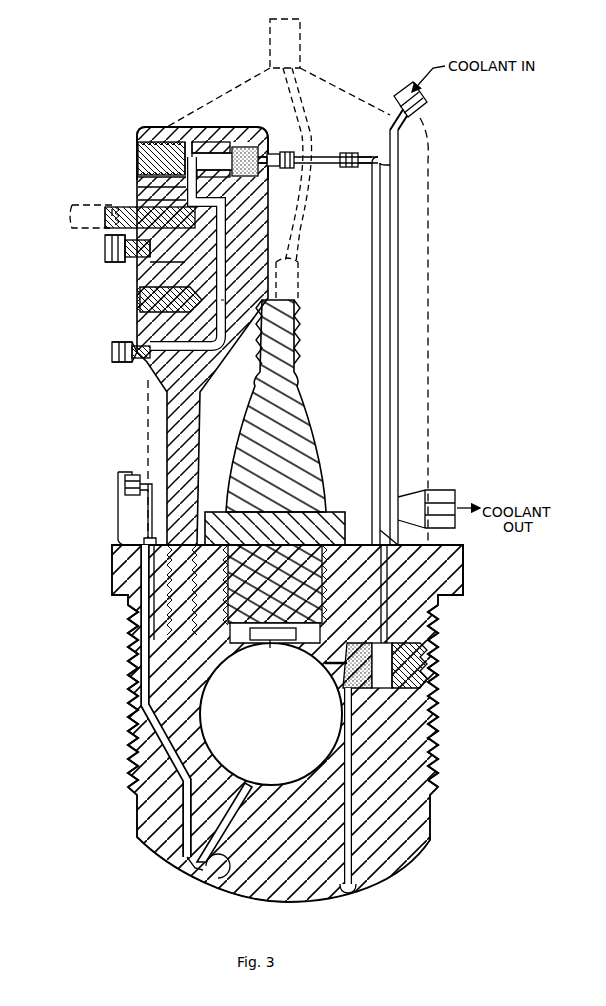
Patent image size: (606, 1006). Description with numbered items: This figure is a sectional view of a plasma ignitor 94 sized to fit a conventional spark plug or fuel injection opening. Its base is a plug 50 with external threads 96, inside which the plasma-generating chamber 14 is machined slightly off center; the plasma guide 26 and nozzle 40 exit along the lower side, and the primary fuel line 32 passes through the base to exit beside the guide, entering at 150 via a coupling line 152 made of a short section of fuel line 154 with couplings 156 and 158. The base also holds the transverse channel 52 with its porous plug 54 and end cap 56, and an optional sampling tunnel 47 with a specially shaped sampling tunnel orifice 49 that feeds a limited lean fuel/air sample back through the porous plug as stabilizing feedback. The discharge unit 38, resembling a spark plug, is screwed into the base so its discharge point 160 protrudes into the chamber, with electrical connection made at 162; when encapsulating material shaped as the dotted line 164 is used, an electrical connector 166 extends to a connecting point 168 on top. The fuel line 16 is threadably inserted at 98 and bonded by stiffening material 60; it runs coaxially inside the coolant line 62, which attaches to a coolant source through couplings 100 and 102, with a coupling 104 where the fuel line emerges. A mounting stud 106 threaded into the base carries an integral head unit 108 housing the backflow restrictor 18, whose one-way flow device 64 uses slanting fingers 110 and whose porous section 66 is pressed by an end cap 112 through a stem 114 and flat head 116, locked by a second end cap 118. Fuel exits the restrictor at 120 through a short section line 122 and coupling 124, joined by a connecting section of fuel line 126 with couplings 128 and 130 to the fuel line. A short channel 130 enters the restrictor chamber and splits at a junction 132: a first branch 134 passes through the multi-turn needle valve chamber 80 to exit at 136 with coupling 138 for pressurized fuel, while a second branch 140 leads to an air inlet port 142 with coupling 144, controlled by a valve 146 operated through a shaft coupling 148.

The plasma-generating chamber 14 is at (286, 748).
The fuel line 16 is at (392, 446).
The backflow restrictor 18 is at (205, 128).
The plasma guide 26 is at (224, 885).
The primary fuel line 32 is at (165, 795).
The discharge unit 38 is at (310, 464).
The nozzle 40 is at (216, 880).
The sampling tunnel 47 is at (352, 836).
The sampling tunnel orifice 49 is at (356, 882).
The plug 50 is at (420, 808).
The transverse channel 52 is at (360, 690).
The porous plug 54 is at (345, 668).
The end cap 56 is at (440, 642).
The stiffening material 60 is at (394, 521).
The coolant line 62 is at (402, 366).
The one-way flow device 64 is at (228, 230).
The porous material section 66 is at (252, 156).
The multi-turn needle valve chamber 80 is at (160, 306).
The plasma ignitor 94 is at (160, 905).
The threads 96 is at (130, 722).
The threaded insertion point 98 is at (400, 562).
The coupling 100 is at (418, 110).
The coupling 102 is at (447, 490).
The coupling 104 is at (378, 157).
The mounting stud 106 is at (182, 442).
The head unit 108 is at (256, 178).
The slanting fingers 110 is at (222, 142).
The end cap 112 is at (170, 128).
The stem 114 is at (190, 127).
The flat head 116 is at (242, 147).
The second end cap 118 is at (141, 158).
The fuel line exit 120 is at (274, 176).
The short section line 122 is at (286, 152).
The coupling 124 is at (291, 153).
The connecting section of fuel line 126 is at (352, 167).
The coupling 128 is at (294, 156).
The short channel 130 is at (141, 181).
The junction 132 is at (141, 194).
The first branch 134 is at (230, 252).
The exit point 136 is at (102, 352).
The coupling 138 is at (112, 361).
The second branch 140 is at (162, 268).
The air inlet port 142 is at (100, 250).
The coupling 144 is at (108, 261).
The valve 146 is at (110, 220).
The shaft coupling 148 is at (88, 205).
The entry point 150 is at (140, 540).
The coupling line 152 is at (116, 492).
The short section of fuel line 154 is at (150, 503).
The coupling 156 is at (132, 475).
The coupling 158 is at (150, 556).
The discharge point 160 is at (272, 648).
The electrical connection 162 is at (302, 293).
The encapsuling material outline 164 is at (430, 242).
The electrical connector 166 is at (288, 78).
The connecting point 168 is at (292, 42).